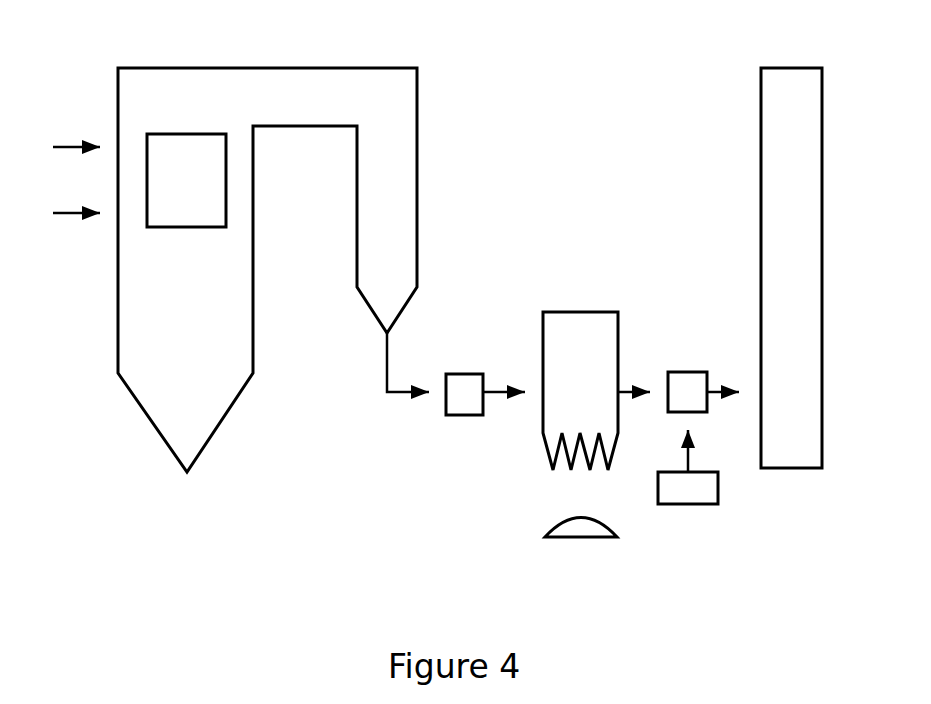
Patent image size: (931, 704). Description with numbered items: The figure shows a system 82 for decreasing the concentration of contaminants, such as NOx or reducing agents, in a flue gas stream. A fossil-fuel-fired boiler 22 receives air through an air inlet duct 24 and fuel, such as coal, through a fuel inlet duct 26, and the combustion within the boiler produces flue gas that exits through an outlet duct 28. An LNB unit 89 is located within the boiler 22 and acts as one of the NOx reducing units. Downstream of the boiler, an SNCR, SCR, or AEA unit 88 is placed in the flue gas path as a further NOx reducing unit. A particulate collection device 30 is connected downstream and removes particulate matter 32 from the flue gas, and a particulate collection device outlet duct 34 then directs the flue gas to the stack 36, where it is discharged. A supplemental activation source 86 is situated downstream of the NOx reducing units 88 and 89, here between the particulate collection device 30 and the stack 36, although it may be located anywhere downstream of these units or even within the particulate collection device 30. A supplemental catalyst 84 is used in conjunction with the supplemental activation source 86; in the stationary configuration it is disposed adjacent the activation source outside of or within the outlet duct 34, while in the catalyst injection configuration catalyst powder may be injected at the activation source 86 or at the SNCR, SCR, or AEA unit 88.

The fossil-fuel-fired boiler 22 is at (153, 430).
The air inlet duct 24 is at (86, 142).
The fuel inlet duct 26 is at (86, 208).
The outlet duct 28 is at (385, 357).
The particulate collection device 30 is at (558, 310).
The particulate matter 32 is at (575, 518).
The particulate collection device outlet duct 34 is at (632, 388).
The stack 36 is at (770, 67).
The system for decreasing the concentration of contaminants 82 is at (567, 113).
The supplemental catalyst 84 is at (685, 370).
The supplemental activation source 86 is at (673, 504).
The SNCR, SCR, or AEA unit 88 is at (455, 372).
The LNB unit 89 is at (150, 228).